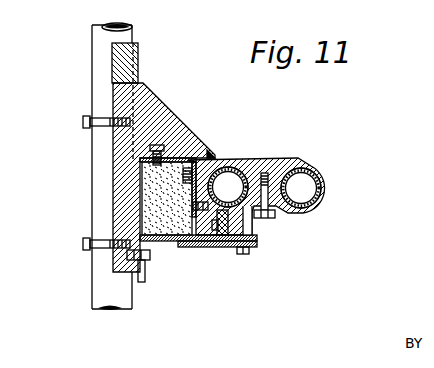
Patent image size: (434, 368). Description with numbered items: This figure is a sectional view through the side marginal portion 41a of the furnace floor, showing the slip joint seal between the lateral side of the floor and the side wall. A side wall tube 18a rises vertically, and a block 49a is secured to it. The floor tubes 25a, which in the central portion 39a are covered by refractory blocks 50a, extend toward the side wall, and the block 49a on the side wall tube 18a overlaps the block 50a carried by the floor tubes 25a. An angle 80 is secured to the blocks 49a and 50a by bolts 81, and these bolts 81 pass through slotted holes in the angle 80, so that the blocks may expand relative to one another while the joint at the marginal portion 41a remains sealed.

The side wall tube 18a is at (92, 40).
The block 49a is at (163, 97).
The marginal portion 41a is at (200, 125).
The angle 80 is at (216, 155).
The bolt 81 is at (155, 172).
The refractory block 50a is at (253, 162).
The central portion 39a is at (299, 163).
The floor tube 25a is at (317, 191).